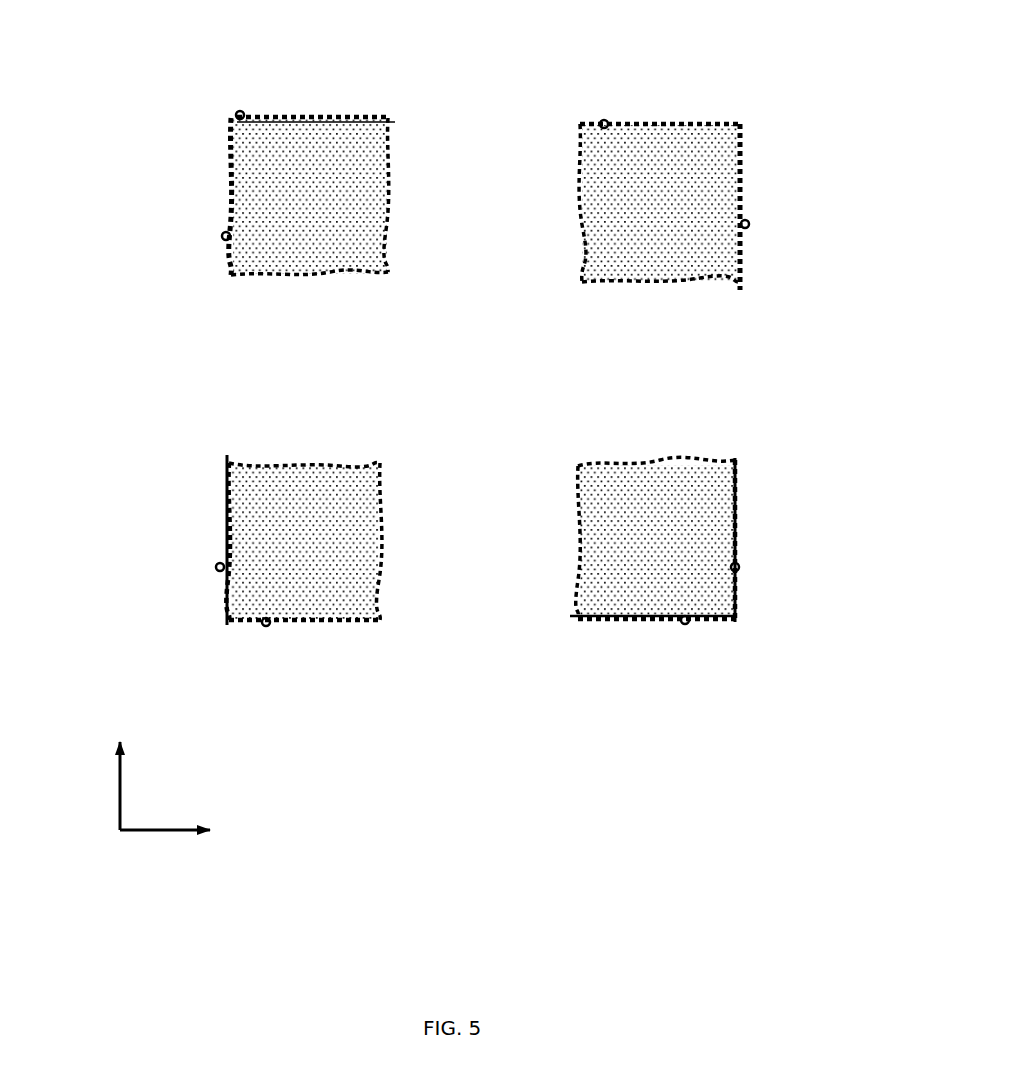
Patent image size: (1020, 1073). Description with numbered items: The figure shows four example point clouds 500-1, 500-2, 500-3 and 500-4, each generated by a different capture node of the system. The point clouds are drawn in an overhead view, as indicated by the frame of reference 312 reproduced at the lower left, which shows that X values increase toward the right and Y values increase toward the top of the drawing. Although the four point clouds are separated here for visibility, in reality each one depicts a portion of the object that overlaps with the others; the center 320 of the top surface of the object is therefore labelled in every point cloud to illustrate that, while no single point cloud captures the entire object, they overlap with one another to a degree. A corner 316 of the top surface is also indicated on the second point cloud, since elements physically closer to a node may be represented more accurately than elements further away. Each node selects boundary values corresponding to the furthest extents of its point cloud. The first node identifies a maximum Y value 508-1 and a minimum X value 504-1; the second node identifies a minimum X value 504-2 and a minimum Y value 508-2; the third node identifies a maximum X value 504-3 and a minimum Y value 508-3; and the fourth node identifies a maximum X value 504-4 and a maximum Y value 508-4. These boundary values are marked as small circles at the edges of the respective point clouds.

The point cloud 500-1 is at (185, 120).
The point cloud 500-2 is at (140, 507).
The point cloud 500-3 is at (770, 646).
The point cloud 500-4 is at (783, 112).
The minimum X value 504-1 is at (222, 236).
The minimum X value 504-2 is at (216, 568).
The maximum X value 504-3 is at (739, 567).
The maximum X value 504-4 is at (749, 224).
The maximum Y value 508-1 is at (240, 111).
The minimum Y value 508-2 is at (266, 626).
The minimum Y value 508-3 is at (685, 624).
The maximum Y value 508-4 is at (604, 120).
The center 320 is at (357, 235).
The corner 316 is at (223, 624).
The frame of reference 312 is at (130, 832).